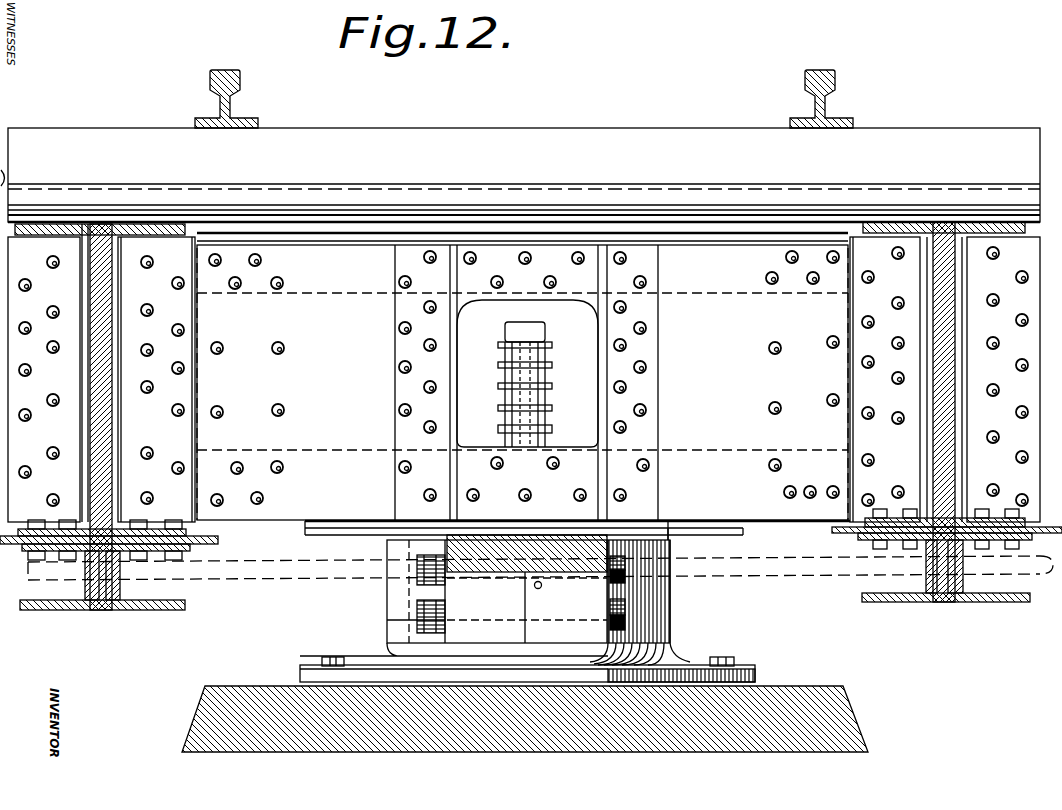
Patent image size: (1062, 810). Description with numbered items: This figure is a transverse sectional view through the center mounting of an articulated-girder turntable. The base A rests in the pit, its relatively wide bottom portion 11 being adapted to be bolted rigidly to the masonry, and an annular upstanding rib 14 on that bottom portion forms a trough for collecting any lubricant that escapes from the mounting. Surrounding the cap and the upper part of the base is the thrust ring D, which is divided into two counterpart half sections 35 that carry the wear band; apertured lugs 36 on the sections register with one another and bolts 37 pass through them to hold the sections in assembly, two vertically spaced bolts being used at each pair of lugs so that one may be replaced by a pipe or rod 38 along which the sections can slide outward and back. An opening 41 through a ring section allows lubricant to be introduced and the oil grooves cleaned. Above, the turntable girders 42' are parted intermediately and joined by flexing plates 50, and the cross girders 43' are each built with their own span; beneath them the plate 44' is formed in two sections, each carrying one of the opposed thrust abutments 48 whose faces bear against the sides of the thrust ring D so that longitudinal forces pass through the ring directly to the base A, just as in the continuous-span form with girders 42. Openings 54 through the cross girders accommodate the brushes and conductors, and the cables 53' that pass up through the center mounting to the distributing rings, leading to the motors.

The bottom portion 11 is at (760, 673).
The annular upstanding rib 14 is at (360, 664).
The thrust ring section 35 is at (670, 617).
The apertured lugs 36 is at (499, 594).
The bolts 37 is at (622, 577).
The pipes or rods 38 is at (796, 565).
The opening 41 is at (541, 585).
The girders 42 is at (101, 417).
The girders 42' is at (945, 412).
The cross girders 43' is at (522, 376).
The plate 44' is at (577, 553).
The thrust abutments 48 is at (547, 552).
The flexing plates 50 is at (135, 562).
The spring column 53' is at (545, 384).
The openings 54 is at (580, 310).
The base A is at (300, 678).
The thrust ring D is at (668, 530).